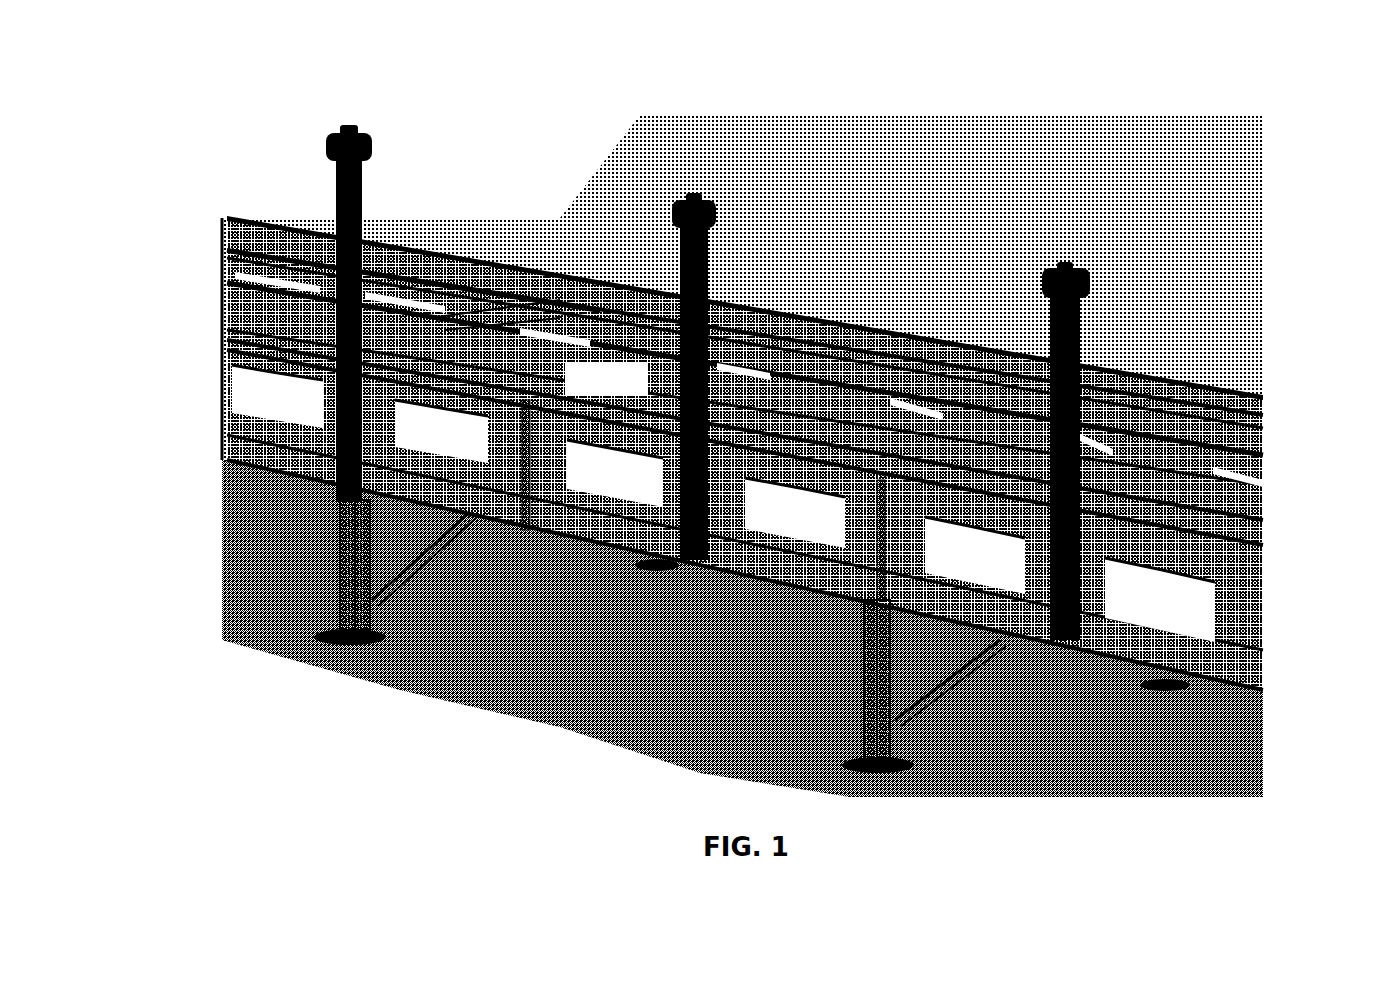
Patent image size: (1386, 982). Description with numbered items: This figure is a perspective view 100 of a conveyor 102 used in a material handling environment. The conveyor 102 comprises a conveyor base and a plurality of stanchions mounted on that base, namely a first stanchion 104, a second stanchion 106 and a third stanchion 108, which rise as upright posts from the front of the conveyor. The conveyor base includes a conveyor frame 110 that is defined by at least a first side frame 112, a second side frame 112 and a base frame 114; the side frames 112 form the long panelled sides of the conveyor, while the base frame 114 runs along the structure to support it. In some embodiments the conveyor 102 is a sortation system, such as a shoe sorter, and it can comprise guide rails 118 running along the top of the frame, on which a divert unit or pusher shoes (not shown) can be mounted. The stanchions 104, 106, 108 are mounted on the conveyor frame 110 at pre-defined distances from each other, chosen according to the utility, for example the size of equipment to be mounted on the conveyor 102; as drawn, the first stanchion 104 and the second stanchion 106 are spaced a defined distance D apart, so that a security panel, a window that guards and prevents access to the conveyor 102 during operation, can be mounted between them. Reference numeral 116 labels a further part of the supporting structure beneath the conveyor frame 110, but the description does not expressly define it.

The perspective view 100 is at (210, 118).
The conveyor 102 is at (742, 453).
The first stanchion 104 is at (363, 220).
The second stanchion 106 is at (710, 245).
The third stanchion 108 is at (1085, 335).
The conveyor frame 110 is at (505, 556).
The side frame 112 is at (258, 432).
The base frame 114 is at (227, 252).
The foot 116 is at (757, 583).
The guide rails 118 is at (532, 322).